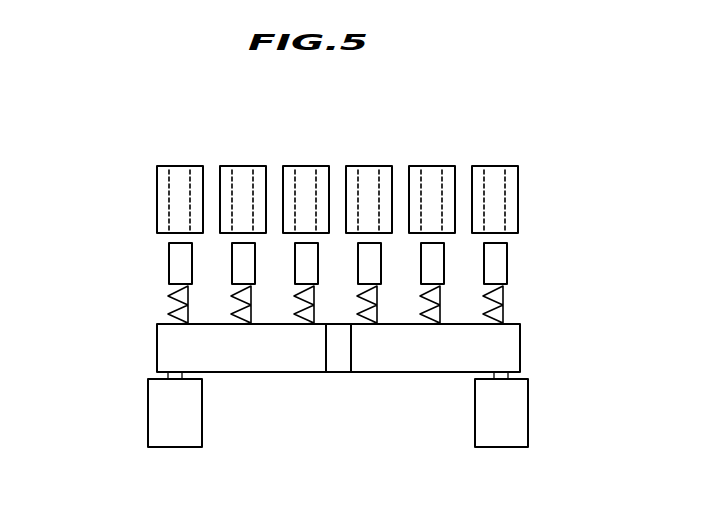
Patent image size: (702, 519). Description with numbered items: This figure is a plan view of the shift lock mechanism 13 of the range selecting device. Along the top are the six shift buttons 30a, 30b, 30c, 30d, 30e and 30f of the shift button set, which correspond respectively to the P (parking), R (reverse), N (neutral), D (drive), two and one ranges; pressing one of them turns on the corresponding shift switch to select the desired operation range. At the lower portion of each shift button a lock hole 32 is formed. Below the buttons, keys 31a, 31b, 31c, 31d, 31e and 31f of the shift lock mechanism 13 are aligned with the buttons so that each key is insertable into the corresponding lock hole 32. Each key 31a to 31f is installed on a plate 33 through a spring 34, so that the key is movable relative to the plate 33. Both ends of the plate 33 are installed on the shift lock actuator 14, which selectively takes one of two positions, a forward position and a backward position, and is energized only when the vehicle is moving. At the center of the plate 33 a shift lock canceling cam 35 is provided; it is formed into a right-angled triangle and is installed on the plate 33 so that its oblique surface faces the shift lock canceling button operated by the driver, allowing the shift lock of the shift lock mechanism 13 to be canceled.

The shift button 30a is at (163, 165).
The shift button 30b is at (228, 165).
The shift button 30c is at (290, 165).
The shift button 30d is at (351, 165).
The shift button 30e is at (414, 165).
The shift button 30f is at (478, 165).
The key 31a is at (169, 263).
The key 31b is at (239, 269).
The key 31c is at (300, 267).
The key 31d is at (375, 267).
The key 31e is at (438, 268).
The key 31f is at (507, 252).
The lock hole 32 is at (430, 175).
The plate 33 is at (520, 345).
The spring 34 is at (497, 318).
The shift lock canceling cam 35 is at (340, 373).
The shift lock actuator 14 is at (148, 415).
The shift lock mechanism 13 is at (132, 297).